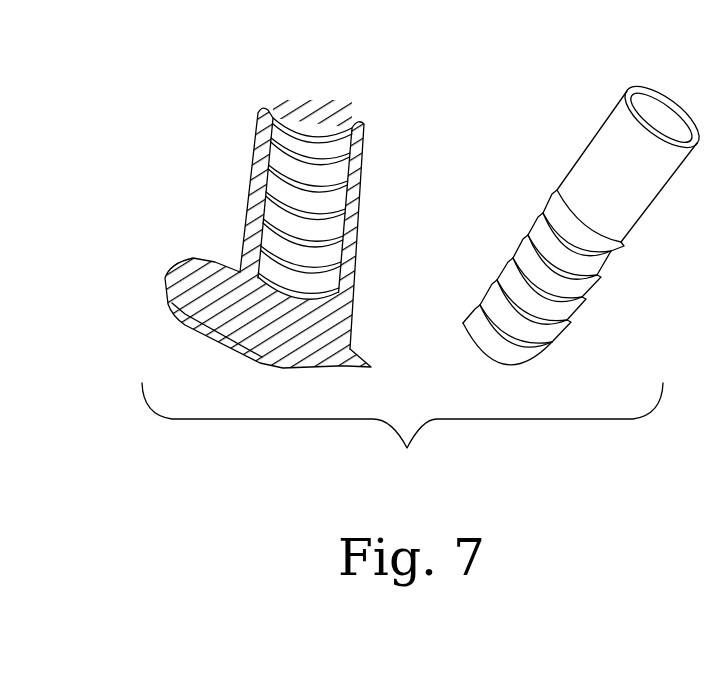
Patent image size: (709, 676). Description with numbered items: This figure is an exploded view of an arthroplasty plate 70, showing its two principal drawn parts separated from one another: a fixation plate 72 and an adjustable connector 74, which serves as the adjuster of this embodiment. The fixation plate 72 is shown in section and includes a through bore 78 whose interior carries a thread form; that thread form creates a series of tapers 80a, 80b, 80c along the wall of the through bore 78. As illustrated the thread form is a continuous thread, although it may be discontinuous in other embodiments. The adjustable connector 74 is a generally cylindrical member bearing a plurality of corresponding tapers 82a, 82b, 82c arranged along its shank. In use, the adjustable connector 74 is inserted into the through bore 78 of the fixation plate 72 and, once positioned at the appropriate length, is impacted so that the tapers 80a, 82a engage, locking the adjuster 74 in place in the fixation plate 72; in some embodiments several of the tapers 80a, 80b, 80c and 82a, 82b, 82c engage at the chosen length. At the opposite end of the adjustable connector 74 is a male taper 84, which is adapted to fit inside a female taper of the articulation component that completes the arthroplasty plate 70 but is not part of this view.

The arthroplasty plate 70 is at (402, 435).
The fixation plate 72 is at (230, 271).
The adjustable connector 74 is at (586, 226).
The through bore 78 is at (308, 124).
The taper 80a is at (348, 150).
The taper 80b is at (347, 188).
The taper 80c is at (345, 241).
The corresponding taper 82a is at (621, 246).
The corresponding taper 82b is at (589, 293).
The corresponding taper 82c is at (554, 338).
The male taper 84 is at (632, 124).